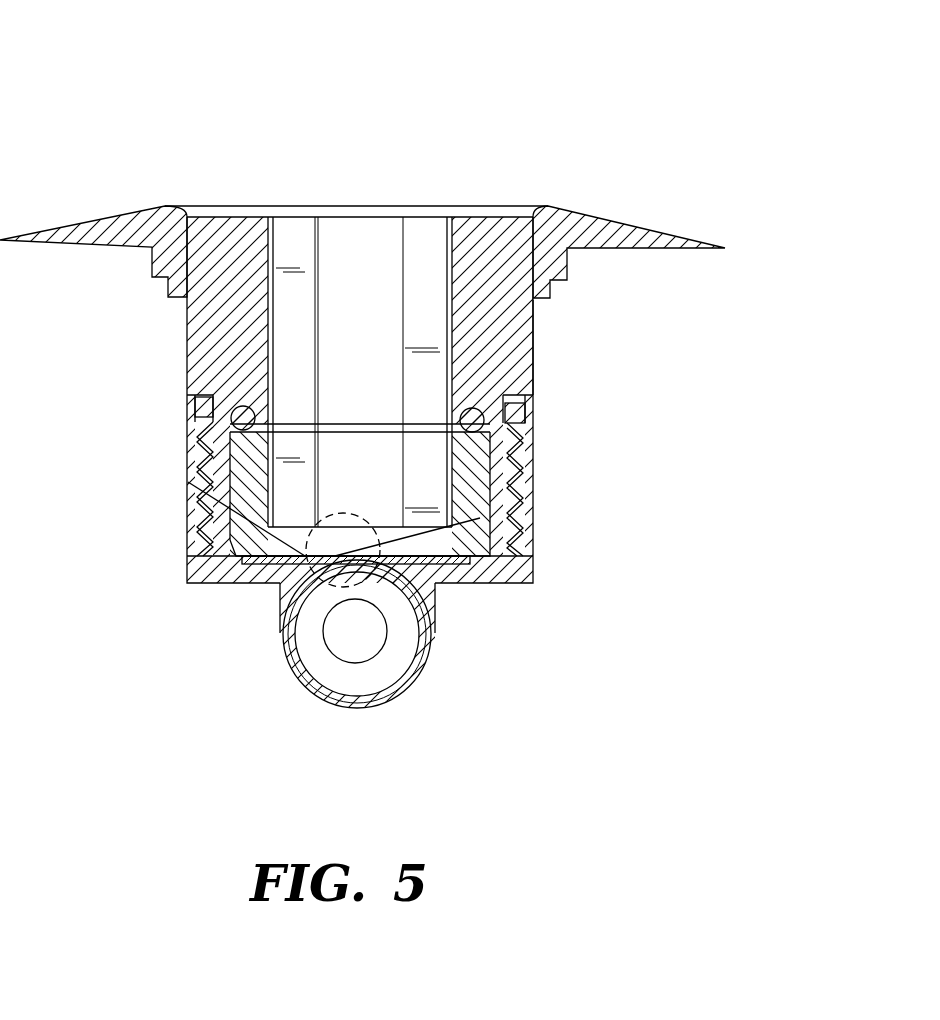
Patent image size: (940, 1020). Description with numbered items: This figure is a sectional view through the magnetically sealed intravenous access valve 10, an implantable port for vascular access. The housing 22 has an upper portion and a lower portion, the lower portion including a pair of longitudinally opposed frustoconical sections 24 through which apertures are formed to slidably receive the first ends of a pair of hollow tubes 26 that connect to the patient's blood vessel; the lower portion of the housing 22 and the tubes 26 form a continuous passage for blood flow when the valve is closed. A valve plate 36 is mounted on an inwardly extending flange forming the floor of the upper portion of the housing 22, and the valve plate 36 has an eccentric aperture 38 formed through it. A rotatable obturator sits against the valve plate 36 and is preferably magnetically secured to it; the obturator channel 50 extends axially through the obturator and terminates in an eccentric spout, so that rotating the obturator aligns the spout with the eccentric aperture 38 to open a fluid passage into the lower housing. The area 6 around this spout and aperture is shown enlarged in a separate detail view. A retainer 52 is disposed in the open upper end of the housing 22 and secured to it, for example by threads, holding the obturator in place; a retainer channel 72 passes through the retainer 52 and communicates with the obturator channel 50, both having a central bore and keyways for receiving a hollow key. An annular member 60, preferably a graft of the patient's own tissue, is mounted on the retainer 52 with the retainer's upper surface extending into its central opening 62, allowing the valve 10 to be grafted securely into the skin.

The magnetically sealed intravenous access valve 10 is at (836, 144).
The annular member 60 is at (667, 232).
The central opening 62 is at (283, 164).
The retainer 52 is at (533, 360).
The retainer channel 72 is at (380, 240).
The housing 22 is at (533, 433).
The obturator channel 50 is at (410, 484).
The area 6 is at (188, 482).
The eccentric aperture 38 is at (360, 562).
The valve plate 36 is at (442, 583).
The frustoconical section 24 is at (433, 650).
The hollow tube 26 is at (335, 682).